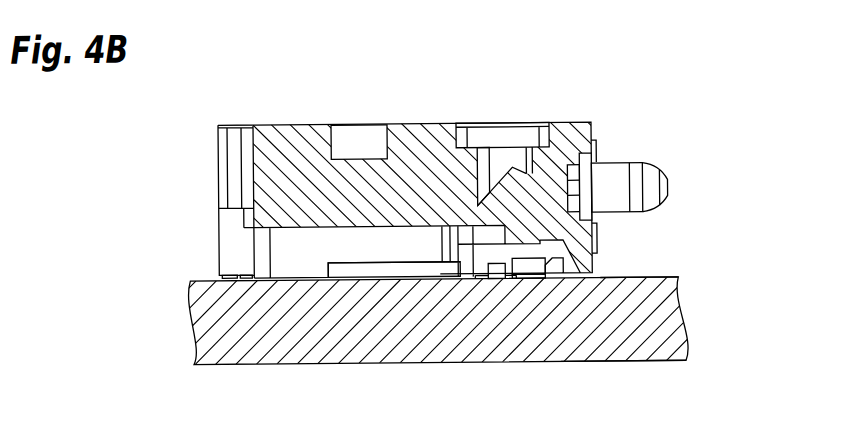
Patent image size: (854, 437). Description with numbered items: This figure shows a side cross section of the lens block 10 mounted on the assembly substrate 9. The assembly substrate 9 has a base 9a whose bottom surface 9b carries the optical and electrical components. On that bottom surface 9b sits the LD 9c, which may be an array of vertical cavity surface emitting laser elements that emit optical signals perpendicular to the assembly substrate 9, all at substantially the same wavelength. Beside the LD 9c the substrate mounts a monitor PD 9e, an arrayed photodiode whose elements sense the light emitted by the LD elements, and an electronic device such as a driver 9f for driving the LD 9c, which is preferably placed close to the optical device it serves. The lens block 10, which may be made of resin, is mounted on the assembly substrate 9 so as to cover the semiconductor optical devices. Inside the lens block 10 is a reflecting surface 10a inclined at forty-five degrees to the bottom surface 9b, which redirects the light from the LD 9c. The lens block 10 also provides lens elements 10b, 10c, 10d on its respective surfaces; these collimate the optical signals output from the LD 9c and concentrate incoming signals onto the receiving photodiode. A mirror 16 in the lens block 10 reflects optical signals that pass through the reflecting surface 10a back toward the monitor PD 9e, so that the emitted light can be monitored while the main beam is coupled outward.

The lens block 10 is at (578, 112).
The reflecting surface 10a is at (497, 188).
The mirror 16 is at (517, 136).
The lens element 10d is at (574, 188).
The lens element 10b is at (492, 276).
The lens element 10c is at (528, 272).
The assembly substrate 9 is at (697, 272).
The base 9a is at (632, 352).
The bottom surface 9b is at (637, 279).
The LD 9c is at (497, 280).
The monitor PD 9e is at (532, 277).
The driver 9f is at (361, 276).